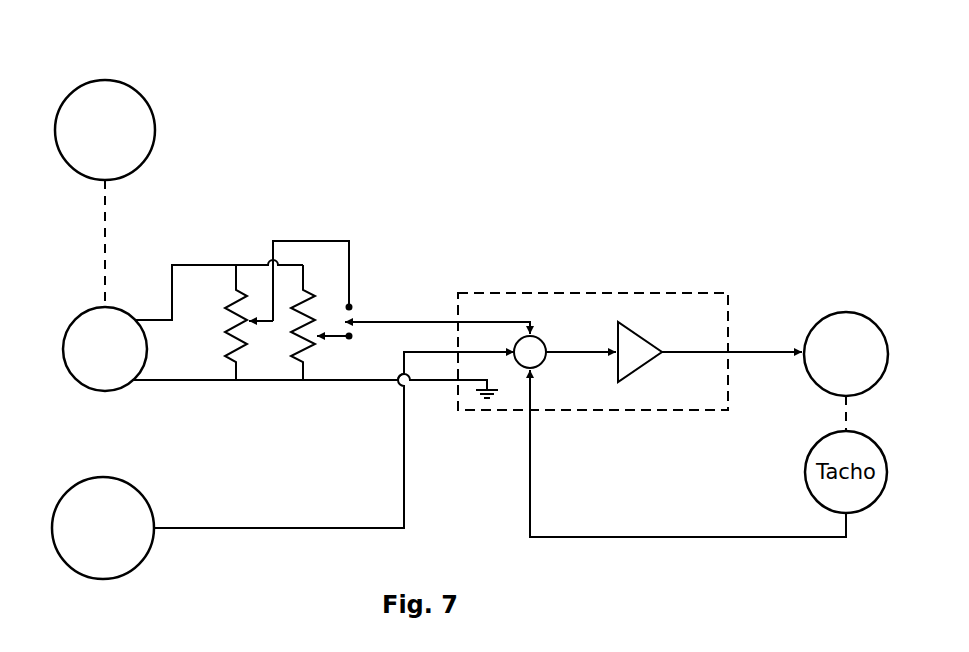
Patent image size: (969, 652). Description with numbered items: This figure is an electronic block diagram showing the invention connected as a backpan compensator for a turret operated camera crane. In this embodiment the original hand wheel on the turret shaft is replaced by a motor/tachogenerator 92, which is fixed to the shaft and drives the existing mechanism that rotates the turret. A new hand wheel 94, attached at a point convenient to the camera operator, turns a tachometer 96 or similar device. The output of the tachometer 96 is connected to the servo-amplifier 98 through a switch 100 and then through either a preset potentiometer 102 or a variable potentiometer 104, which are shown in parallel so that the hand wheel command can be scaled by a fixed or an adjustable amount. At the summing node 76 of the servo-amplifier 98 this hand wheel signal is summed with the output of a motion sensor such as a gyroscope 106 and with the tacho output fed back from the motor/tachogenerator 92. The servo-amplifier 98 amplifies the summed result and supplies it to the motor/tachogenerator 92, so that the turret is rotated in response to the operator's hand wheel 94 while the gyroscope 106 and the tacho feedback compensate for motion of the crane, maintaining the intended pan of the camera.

The hand wheel 94 is at (152, 108).
The tachometer 96 is at (71, 373).
The switch 100 is at (367, 300).
The preset potentiometer 102 is at (245, 348).
The variable potentiometer 104 is at (313, 348).
The gyroscope 106 is at (145, 500).
The servo-amplifier 98 is at (609, 355).
The summing node 76 is at (547, 360).
The motor/tachogenerator 92 is at (857, 313).